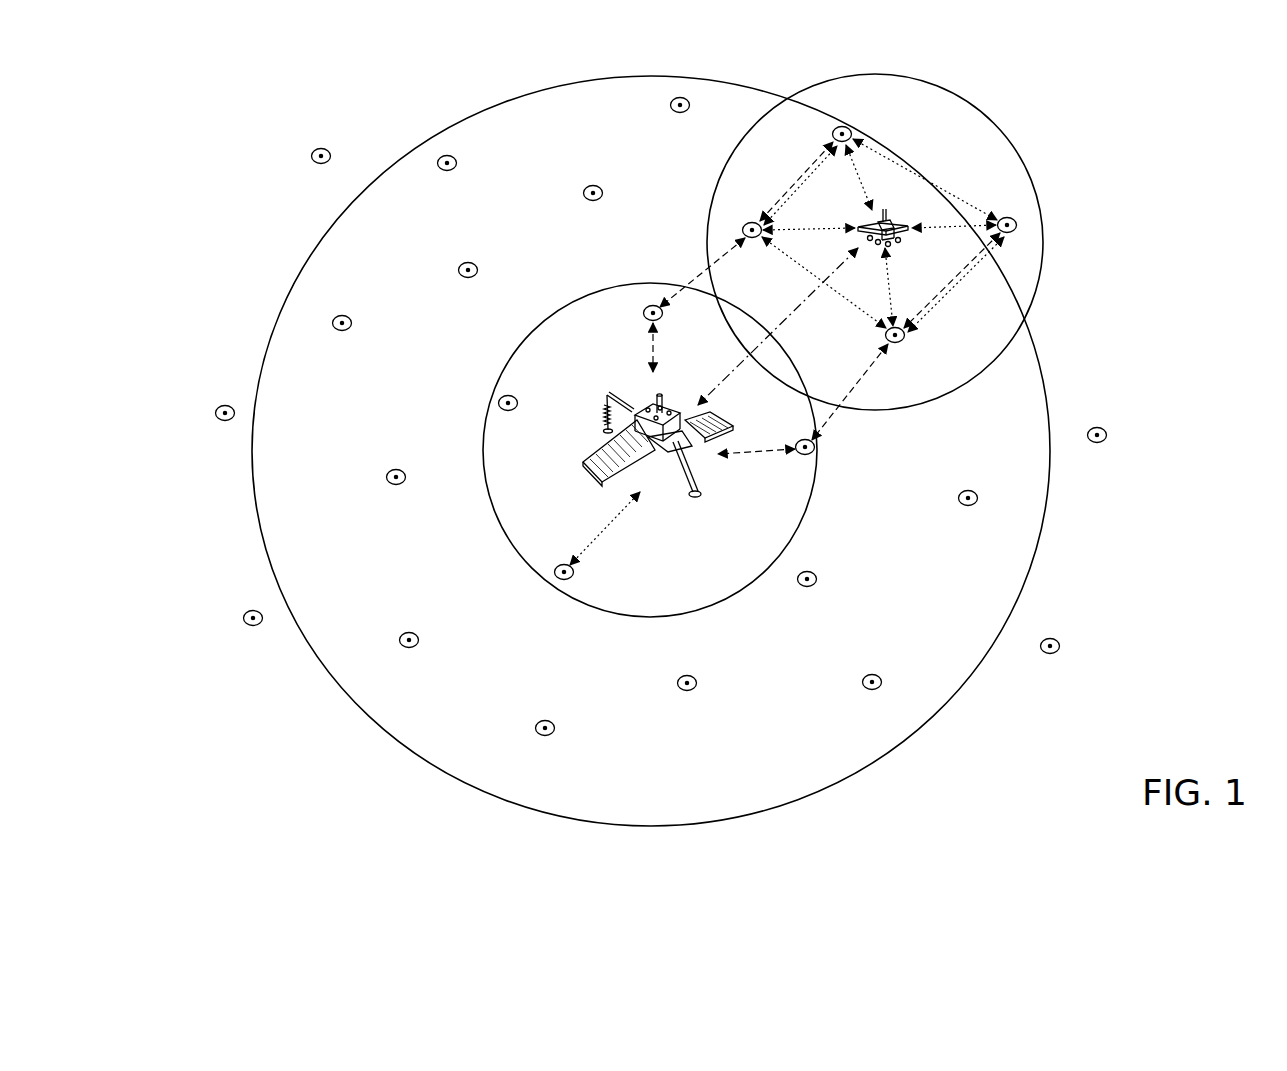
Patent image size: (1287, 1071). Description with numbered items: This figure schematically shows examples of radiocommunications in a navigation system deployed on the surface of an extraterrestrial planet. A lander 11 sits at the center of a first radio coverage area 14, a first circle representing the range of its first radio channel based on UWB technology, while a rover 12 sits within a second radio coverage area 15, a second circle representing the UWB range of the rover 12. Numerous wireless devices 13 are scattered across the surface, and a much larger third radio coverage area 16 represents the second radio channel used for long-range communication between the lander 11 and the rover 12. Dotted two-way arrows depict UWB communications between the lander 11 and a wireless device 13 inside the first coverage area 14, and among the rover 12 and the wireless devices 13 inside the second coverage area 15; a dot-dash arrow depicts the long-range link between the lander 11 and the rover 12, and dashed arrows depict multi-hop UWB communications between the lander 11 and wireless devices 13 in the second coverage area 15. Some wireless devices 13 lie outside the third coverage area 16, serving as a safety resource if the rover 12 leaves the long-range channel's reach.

The lander 11 is at (690, 453).
The rover 12 is at (909, 233).
The wireless devices 13 is at (316, 150).
The first radio coverage area 14 is at (666, 543).
The second radio coverage area 15 is at (942, 152).
The third radio coverage area 16 is at (600, 760).